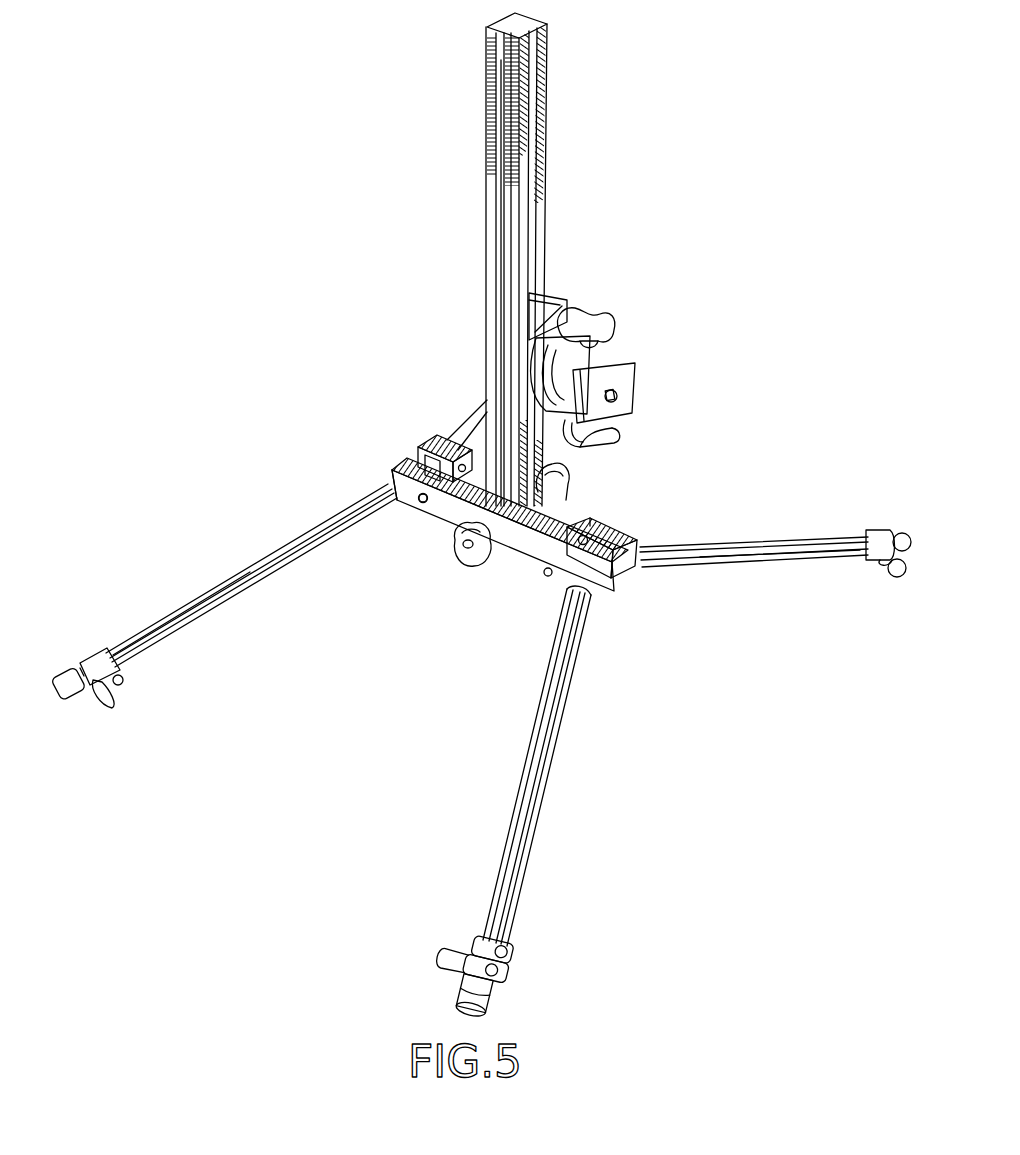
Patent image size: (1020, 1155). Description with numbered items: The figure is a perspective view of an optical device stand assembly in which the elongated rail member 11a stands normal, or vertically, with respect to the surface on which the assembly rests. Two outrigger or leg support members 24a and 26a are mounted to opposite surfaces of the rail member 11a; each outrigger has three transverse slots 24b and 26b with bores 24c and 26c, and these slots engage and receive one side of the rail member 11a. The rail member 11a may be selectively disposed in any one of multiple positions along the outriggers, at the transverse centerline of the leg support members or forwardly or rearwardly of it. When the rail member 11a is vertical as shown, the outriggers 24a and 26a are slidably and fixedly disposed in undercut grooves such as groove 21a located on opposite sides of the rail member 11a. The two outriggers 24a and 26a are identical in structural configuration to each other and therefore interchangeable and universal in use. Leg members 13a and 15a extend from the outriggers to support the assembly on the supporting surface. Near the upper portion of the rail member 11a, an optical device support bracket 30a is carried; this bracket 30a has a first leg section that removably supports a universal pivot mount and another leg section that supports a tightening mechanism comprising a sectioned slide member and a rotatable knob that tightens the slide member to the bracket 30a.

The elongated rail member 11a is at (488, 108).
The undercut groove 21a is at (502, 278).
The optical device support bracket 30a is at (566, 292).
The outrigger member 26a is at (560, 590).
The transverse slot 26b is at (433, 468).
The bore 26c is at (423, 502).
The outrigger member 24a is at (633, 537).
The transverse slot 24b is at (580, 508).
The bore 24c is at (620, 603).
The leg member 13a is at (783, 537).
The leg member 15a is at (562, 738).